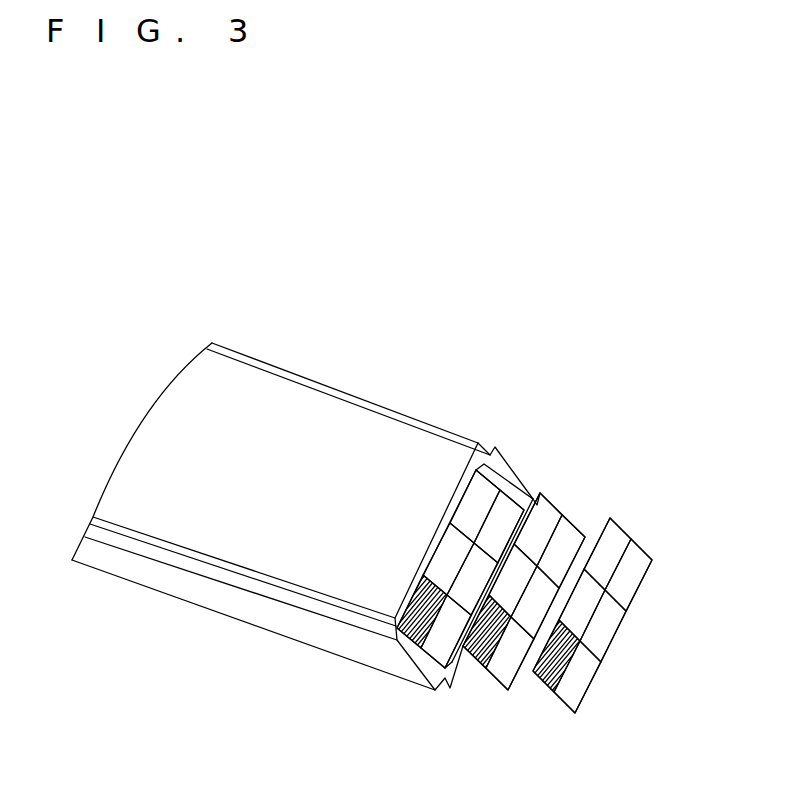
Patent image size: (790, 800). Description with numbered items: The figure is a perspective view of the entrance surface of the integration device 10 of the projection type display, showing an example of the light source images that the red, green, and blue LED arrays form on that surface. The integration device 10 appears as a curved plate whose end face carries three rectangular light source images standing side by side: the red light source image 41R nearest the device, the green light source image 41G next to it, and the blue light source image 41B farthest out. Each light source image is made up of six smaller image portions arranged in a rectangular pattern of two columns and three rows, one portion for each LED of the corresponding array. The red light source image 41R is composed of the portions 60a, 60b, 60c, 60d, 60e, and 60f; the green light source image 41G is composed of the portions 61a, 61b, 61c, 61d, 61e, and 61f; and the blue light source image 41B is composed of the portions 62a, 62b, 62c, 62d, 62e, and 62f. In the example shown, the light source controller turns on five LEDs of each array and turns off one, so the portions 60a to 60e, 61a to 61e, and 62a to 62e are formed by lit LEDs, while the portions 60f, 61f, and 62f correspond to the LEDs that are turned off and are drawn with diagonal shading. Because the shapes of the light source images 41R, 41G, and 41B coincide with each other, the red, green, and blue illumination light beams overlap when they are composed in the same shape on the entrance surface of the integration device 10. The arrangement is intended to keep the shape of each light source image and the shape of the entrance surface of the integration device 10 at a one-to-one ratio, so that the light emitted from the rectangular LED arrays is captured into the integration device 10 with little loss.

The integration device 10 is at (350, 393).
The light source image 41R is at (412, 644).
The light source image 41G is at (505, 692).
The light source image 41B is at (585, 722).
The light source image portion 60a is at (427, 663).
The light source image portion 60b is at (465, 578).
The light source image portion 60c is at (500, 520).
The light source image portion 60d is at (485, 488).
The light source image portion 60e is at (443, 550).
The light source image portion 60f is at (412, 605).
The light source image portion 61a is at (497, 665).
The light source image portion 61b is at (586, 683).
The light source image portion 61c is at (572, 530).
The light source image portion 61d is at (552, 508).
The light source image portion 61e is at (468, 523).
The light source image portion 61f is at (470, 667).
The light source image portion 62a is at (567, 697).
The light source image portion 62b is at (600, 650).
The light source image portion 62c is at (642, 548).
The light source image portion 62d is at (616, 525).
The light source image portion 62e is at (602, 642).
The light source image portion 62f is at (543, 667).